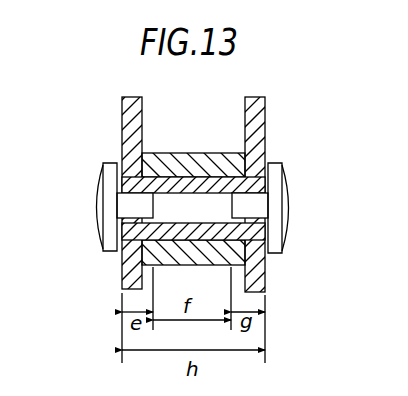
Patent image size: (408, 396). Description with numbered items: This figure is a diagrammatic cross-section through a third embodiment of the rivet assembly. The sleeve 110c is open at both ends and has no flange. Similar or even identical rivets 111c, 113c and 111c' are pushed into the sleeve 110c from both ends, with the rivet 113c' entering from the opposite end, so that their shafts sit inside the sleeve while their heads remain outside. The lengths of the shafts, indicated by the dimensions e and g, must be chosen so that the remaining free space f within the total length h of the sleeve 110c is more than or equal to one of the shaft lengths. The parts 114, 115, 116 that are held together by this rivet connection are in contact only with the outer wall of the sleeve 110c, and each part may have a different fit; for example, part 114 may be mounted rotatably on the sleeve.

The part 116 is at (131, 116).
The part 115 is at (255, 116).
The part 114 is at (202, 162).
The sleeve 110c is at (158, 186).
The rivet shaft 113c is at (95, 185).
The rivet 113c' is at (292, 184).
The rivet 111c is at (74, 207).
The rivet 111c' is at (310, 211).